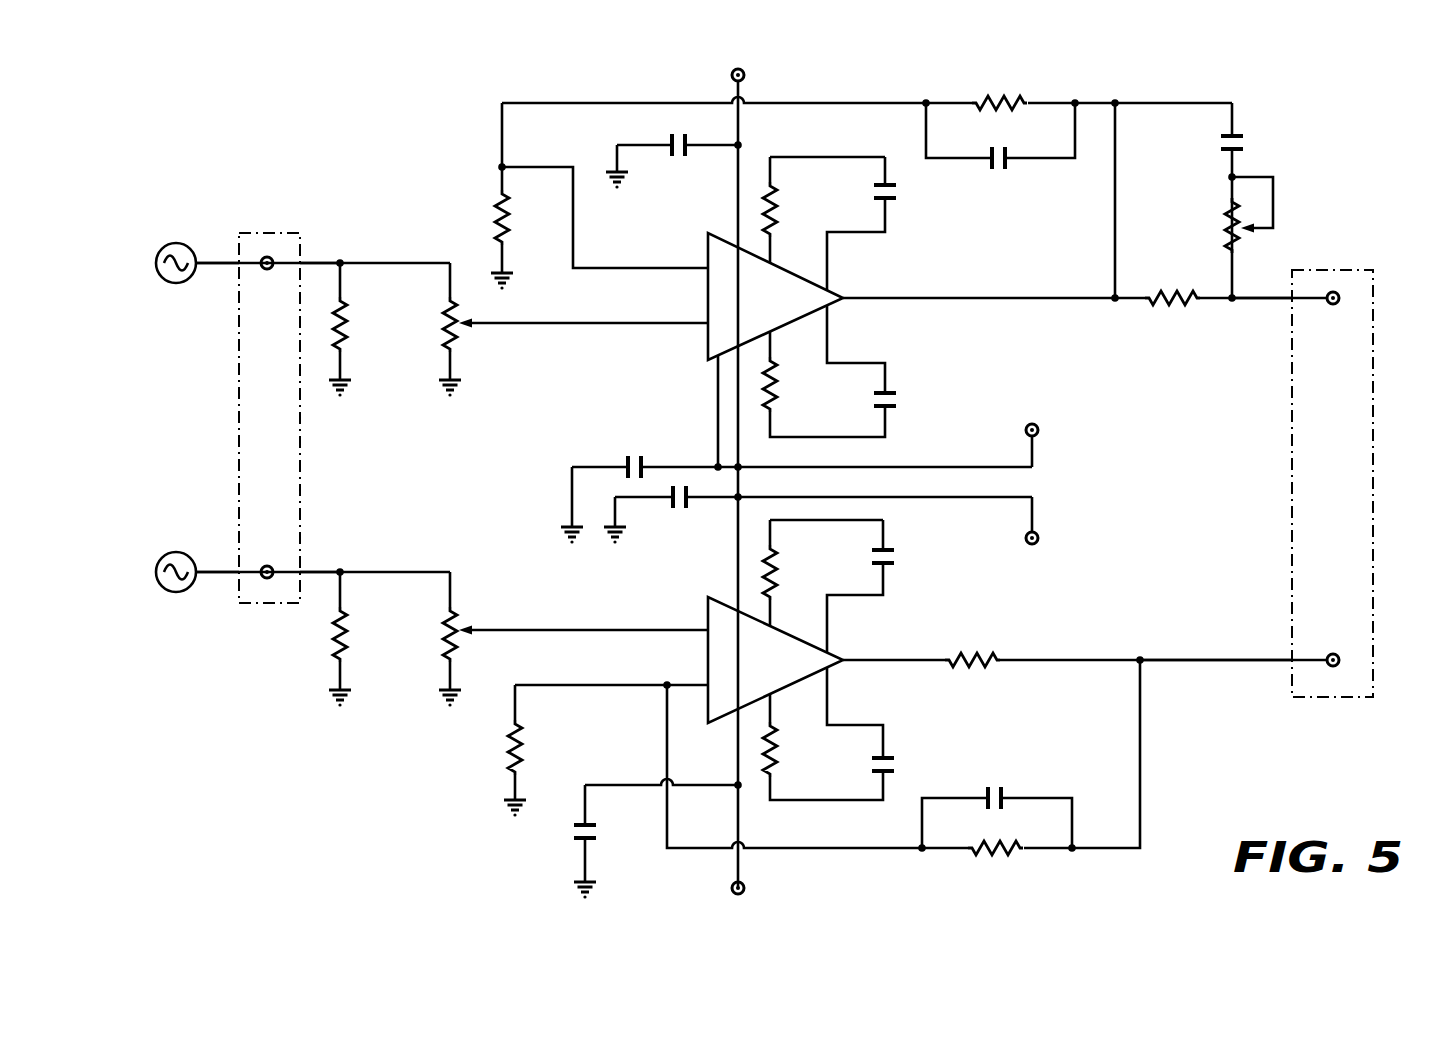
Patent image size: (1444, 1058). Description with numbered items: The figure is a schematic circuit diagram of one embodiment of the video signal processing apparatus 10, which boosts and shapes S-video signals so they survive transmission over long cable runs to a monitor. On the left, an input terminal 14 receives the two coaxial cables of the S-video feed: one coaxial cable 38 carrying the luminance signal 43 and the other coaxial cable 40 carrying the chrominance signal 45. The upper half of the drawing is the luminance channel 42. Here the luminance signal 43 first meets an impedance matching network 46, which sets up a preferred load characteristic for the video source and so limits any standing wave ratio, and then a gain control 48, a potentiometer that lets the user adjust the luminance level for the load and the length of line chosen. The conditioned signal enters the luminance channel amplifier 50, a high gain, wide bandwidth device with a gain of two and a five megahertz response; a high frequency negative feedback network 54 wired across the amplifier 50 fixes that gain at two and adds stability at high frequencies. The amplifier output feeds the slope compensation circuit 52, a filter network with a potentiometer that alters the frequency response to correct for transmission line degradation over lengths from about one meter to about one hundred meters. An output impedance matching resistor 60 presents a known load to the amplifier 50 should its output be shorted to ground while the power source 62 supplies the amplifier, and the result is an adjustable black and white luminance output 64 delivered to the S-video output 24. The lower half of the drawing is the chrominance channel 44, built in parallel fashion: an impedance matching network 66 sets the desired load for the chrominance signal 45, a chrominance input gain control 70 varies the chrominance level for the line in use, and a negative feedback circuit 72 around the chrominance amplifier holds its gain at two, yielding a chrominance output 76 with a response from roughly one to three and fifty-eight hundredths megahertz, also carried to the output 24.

The video signal processing apparatus 10 is at (1370, 141).
The input terminal 14 is at (292, 238).
The S-video signal output 24 is at (1355, 552).
The coaxial cable for luminance signal transmission 38 is at (222, 260).
The coaxial cable for chrominance signal transmission 40 is at (217, 571).
The luminance channel 42 is at (316, 250).
The luminance signal 43 is at (186, 243).
The chrominance channel 44 is at (308, 610).
The chrominance signal 45 is at (175, 592).
The impedance matching network 46 is at (350, 320).
The gain control 48 is at (446, 346).
The luminance channel amplifier 50 is at (708, 290).
The slope compensation circuit 52 is at (1270, 166).
The high frequency negative feedback network 54 is at (1038, 178).
The output impedance matching resistor 60 is at (708, 660).
The power source 62 is at (718, 76).
The luminance output 64 is at (1373, 337).
The impedance matching network 66 is at (337, 652).
The chrominance input gain control 70 is at (447, 652).
The negative feedback circuit 72 is at (1030, 777).
The chrominance output 76 is at (1340, 666).